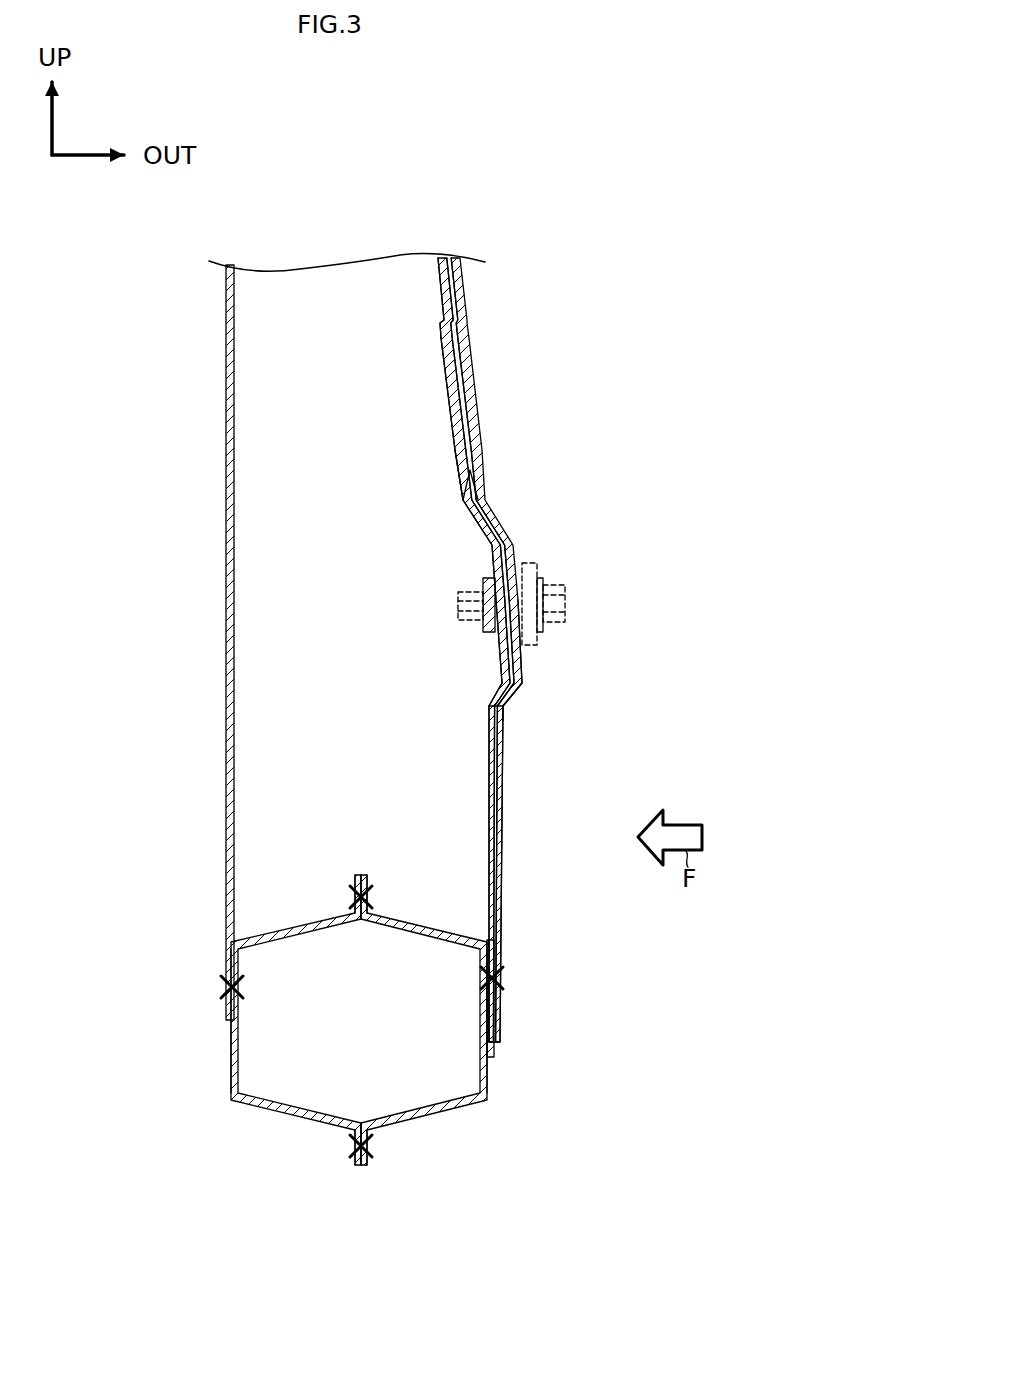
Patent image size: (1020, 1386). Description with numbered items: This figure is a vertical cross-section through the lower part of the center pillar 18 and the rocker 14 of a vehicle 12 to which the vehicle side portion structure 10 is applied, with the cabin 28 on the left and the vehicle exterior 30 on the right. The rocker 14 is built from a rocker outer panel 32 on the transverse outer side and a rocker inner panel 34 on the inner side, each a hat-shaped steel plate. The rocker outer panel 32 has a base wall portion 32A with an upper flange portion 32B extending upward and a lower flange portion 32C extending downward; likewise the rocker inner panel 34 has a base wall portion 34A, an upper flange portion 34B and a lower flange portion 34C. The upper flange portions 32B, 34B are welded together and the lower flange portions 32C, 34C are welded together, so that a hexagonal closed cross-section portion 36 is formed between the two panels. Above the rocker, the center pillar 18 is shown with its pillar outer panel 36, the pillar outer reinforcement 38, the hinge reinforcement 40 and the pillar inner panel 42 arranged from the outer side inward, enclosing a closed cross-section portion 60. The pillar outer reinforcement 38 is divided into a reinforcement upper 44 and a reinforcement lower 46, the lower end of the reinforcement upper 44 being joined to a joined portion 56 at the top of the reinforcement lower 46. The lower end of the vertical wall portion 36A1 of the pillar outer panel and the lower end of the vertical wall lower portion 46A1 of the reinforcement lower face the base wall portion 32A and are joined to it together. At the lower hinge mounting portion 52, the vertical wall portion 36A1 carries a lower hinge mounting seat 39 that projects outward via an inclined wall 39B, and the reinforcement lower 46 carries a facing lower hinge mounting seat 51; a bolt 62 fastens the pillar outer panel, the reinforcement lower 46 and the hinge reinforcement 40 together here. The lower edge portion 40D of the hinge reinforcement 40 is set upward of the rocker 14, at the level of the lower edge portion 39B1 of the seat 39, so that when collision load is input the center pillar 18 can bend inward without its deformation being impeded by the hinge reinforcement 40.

The vehicle side portion structure 10 is at (558, 444).
The vehicle 12 is at (678, 351).
The rocker 14 is at (360, 1033).
The center pillar 18 is at (502, 308).
The cabin 28 is at (87, 733).
The vehicle exterior 30 is at (724, 733).
The rocker outer panel 32 is at (448, 1118).
The base wall portion 32A is at (488, 1077).
The upper flange portion 32B is at (369, 882).
The lower flange portion 32C is at (369, 1162).
The rocker inner panel 34 is at (265, 1116).
The base wall portion 34A is at (230, 1052).
The upper flange portion 34B is at (353, 882).
The lower flange portion 34C is at (353, 1162).
The pillar outer panel 36 is at (486, 420).
The vertical wall portion 36A1 is at (500, 908).
The pillar outer reinforcement 38 is at (474, 650).
The lower hinge mounting seat 39 is at (523, 673).
The inclined wall 39B is at (508, 707).
The lower edge portion 39B1 is at (505, 717).
The hinge reinforcement 40 is at (458, 497).
The lower edge portion 40D is at (501, 682).
The pillar inner panel 42 is at (224, 568).
The reinforcement upper 44 is at (458, 343).
The reinforcement lower 46 is at (478, 488).
The vertical wall lower portion 46A1 is at (500, 1020).
The lower hinge mounting seat 51 is at (510, 653).
The lower hinge mounting portion 52 is at (547, 536).
The joined portion 56 is at (474, 367).
The closed cross-section portion 60 is at (360, 658).
The bolt 62 is at (569, 604).